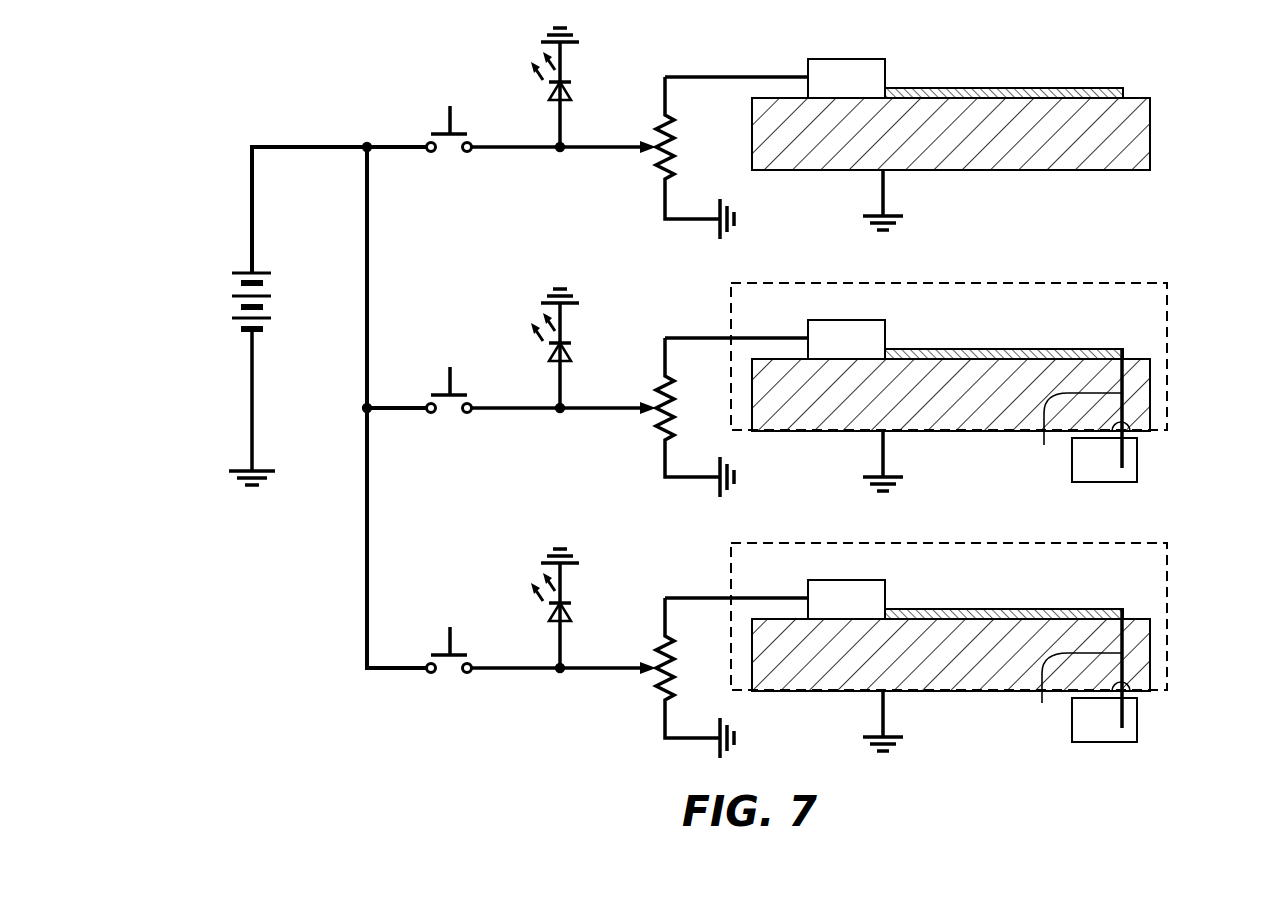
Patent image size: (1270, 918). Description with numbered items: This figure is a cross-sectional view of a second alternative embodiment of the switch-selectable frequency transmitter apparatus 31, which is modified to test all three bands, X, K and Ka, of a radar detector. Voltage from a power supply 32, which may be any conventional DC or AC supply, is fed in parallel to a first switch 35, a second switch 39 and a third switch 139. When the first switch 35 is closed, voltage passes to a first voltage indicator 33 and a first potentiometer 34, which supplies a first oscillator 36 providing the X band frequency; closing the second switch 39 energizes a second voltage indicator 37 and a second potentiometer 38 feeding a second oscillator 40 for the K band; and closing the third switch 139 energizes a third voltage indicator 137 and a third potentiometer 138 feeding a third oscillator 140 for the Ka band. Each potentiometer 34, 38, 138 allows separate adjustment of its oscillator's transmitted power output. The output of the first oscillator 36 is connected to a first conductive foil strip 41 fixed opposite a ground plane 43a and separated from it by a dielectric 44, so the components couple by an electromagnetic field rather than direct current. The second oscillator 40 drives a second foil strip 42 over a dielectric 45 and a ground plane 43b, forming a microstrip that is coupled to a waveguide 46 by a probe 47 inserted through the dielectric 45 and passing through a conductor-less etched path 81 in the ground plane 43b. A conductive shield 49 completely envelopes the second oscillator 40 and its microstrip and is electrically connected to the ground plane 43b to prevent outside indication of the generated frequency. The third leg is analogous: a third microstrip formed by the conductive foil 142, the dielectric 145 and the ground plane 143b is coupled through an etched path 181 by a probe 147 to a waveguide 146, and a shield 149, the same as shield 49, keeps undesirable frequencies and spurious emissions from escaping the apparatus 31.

The switch-selectable frequency transmitter apparatus 31 is at (226, 198).
The power supply 32 is at (240, 272).
The first voltage indicator 33 is at (551, 97).
The first potentiometer 34 is at (656, 128).
The first switch 35 is at (447, 119).
The first oscillator 36 is at (832, 59).
The second voltage indicator 37 is at (550, 358).
The second potentiometer 38 is at (656, 392).
The second switch 39 is at (447, 382).
The second oscillator 40 is at (848, 320).
The first conductive foil strip 41 is at (1037, 88).
The second conductive foil strip 42 is at (1008, 349).
The ground plane 43a is at (1097, 171).
The ground plane 43b is at (987, 431).
The dielectric 44 is at (990, 155).
The dielectric 45 is at (1150, 378).
The waveguide 46 is at (1137, 460).
The probe 47 is at (1077, 433).
The conductive shield 49 is at (1100, 283).
The conductor-less etched path 81 is at (1130, 425).
The third voltage indicator 137 is at (550, 618).
The third potentiometer 138 is at (656, 652).
The third switch 139 is at (447, 643).
The third oscillator 140 is at (847, 580).
The conductive foil 142 is at (1005, 609).
The ground plane 143b is at (985, 691).
The dielectric 145 is at (1148, 638).
The waveguide 146 is at (1137, 720).
The probe 147 is at (1075, 693).
The shield 149 is at (1097, 543).
The conductor-less etched path 181 is at (1130, 686).